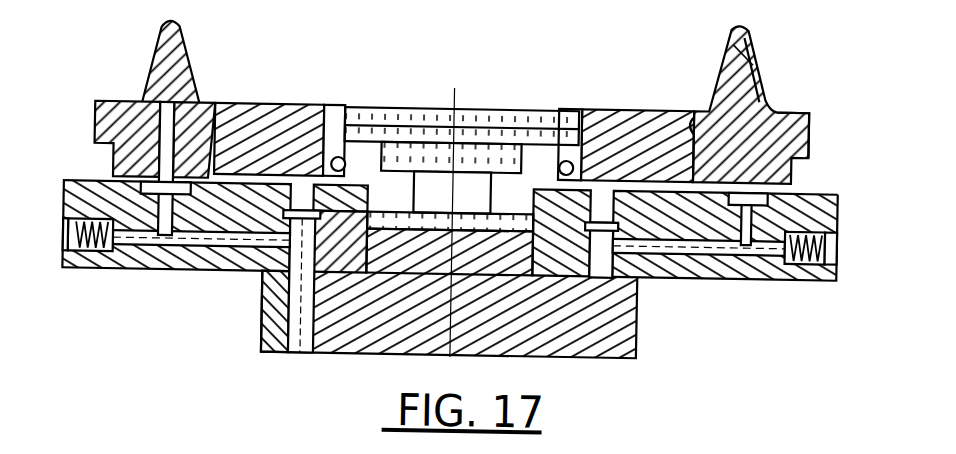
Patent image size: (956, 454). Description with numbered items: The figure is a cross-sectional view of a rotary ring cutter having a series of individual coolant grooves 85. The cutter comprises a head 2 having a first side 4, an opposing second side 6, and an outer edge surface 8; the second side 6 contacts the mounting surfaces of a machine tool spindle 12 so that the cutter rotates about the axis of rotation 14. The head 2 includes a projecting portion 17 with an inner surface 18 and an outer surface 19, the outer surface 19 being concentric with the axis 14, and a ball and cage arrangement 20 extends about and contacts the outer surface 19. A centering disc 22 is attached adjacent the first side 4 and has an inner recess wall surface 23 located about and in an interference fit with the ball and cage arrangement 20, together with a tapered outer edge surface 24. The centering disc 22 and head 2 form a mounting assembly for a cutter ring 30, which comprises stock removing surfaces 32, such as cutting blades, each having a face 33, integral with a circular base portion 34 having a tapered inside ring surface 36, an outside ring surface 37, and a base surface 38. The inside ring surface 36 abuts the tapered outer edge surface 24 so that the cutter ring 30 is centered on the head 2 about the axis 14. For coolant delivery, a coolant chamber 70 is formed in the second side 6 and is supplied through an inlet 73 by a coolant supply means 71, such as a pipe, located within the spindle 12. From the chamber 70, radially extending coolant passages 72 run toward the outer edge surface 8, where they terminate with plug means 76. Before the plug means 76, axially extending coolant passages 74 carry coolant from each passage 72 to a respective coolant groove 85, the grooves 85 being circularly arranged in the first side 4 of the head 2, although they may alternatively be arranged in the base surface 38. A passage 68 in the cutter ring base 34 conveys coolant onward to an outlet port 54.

The head 2 is at (820, 208).
The first side 4 is at (817, 183).
The second side 6 is at (102, 274).
The outer edge surface 8 is at (838, 233).
The machine tool spindle 12 is at (585, 347).
The axis of rotation 14 is at (447, 154).
The projecting portion 17 is at (543, 150).
The inner surface 18 is at (500, 150).
The outer surface 19 is at (573, 158).
The ball and cage arrangement 20 is at (348, 167).
The centering disc 22 is at (261, 120).
The inner recess wall surface 23 is at (331, 158).
The tapered outer edge surface 24 is at (224, 104).
The cutter ring 30 is at (769, 96).
The stock removing surface 32 is at (727, 40).
The face 33 is at (160, 47).
The circular base portion 34 is at (748, 92).
The tapered inside ring surface 36 is at (699, 108).
The outside ring surface 37 is at (803, 109).
The base surface 38 is at (787, 171).
The outlet port 54 is at (158, 105).
The passage 68 is at (131, 129).
The coolant chamber 70 is at (640, 283).
The coolant supply means 71 is at (288, 358).
The coolant passages 72 is at (178, 273).
The inlet 73 is at (265, 289).
The coolant passages 74 is at (62, 192).
The plug means 76 is at (62, 245).
The coolant grooves 85 is at (108, 169).